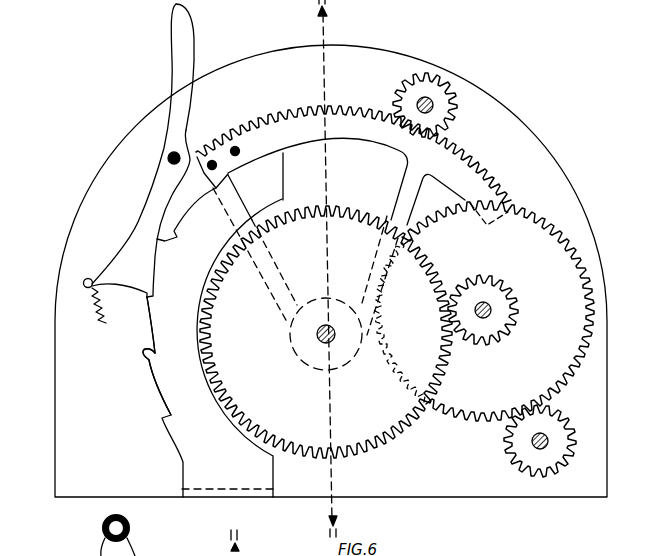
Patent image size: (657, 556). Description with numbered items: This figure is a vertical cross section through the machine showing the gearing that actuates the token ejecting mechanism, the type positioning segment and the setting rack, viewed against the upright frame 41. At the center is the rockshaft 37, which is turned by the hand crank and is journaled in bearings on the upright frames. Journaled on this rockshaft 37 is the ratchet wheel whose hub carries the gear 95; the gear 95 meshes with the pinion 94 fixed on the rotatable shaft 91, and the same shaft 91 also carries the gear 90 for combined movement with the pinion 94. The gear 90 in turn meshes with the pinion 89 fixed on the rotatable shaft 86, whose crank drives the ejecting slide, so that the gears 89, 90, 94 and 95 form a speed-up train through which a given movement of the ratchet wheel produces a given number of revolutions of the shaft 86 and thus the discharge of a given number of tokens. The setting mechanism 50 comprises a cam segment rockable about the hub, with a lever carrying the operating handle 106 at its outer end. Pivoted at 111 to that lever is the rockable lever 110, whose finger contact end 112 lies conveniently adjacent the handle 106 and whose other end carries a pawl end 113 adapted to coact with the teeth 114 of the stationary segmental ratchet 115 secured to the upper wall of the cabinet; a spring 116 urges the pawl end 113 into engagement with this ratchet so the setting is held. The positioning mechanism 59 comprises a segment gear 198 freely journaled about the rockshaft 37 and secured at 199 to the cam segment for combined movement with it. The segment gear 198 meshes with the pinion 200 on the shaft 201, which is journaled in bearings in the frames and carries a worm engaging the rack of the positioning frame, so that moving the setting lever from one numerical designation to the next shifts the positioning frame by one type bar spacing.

The upright frame 41 is at (507, 120).
The finger contact end 112 is at (172, 27).
The rockable lever 110 is at (185, 130).
The pivot 111 is at (168, 158).
The spring 116 is at (97, 310).
The setting mechanism 50 is at (150, 397).
The pawl end 113 is at (146, 303).
The teeth 114 is at (140, 357).
The stationary segmental ratchet 115 is at (153, 380).
The securing point 199 is at (240, 148).
The segment gear 198 is at (336, 110).
The positioning mechanism 59 is at (355, 166).
The gear 95 is at (339, 205).
The rockshaft 37 is at (317, 335).
The gear 90 is at (509, 200).
The pinion 94 is at (516, 300).
The rotatable shaft 91 is at (489, 304).
The pinion 89 is at (562, 410).
The rotatable shaft 86 is at (548, 440).
The pinion 200 is at (411, 76).
The shaft 201 is at (433, 101).
The operating handle 106 is at (131, 527).